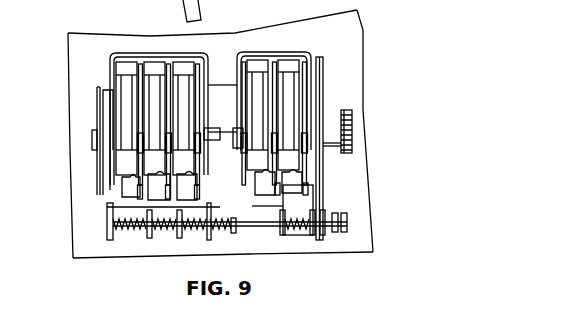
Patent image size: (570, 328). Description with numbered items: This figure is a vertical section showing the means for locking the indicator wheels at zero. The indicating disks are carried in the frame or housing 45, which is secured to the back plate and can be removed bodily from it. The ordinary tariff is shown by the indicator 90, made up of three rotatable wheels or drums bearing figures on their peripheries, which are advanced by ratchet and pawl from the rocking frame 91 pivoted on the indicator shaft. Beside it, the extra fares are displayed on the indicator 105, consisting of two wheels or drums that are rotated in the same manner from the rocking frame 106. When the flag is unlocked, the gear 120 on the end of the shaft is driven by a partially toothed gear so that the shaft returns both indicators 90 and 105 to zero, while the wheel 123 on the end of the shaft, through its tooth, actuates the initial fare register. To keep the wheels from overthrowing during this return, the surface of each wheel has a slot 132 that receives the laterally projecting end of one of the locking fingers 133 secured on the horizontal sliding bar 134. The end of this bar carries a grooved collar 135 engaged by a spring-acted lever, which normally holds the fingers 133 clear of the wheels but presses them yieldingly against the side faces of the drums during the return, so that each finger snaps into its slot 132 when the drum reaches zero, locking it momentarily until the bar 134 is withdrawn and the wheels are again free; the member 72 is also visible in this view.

The support member 72 is at (173, 11).
The rocking frame 91 is at (128, 58).
The indicator 90 is at (158, 130).
The wheel 123 is at (97, 101).
The indicator 105 is at (291, 80).
The rocking frame 106 is at (308, 56).
The frame or housing 45 is at (320, 75).
The gear 120 is at (352, 120).
The slot 132 is at (270, 188).
The locking fingers 133 is at (210, 210).
The horizontal sliding bar 134 is at (262, 224).
The grooved collar 135 is at (347, 224).